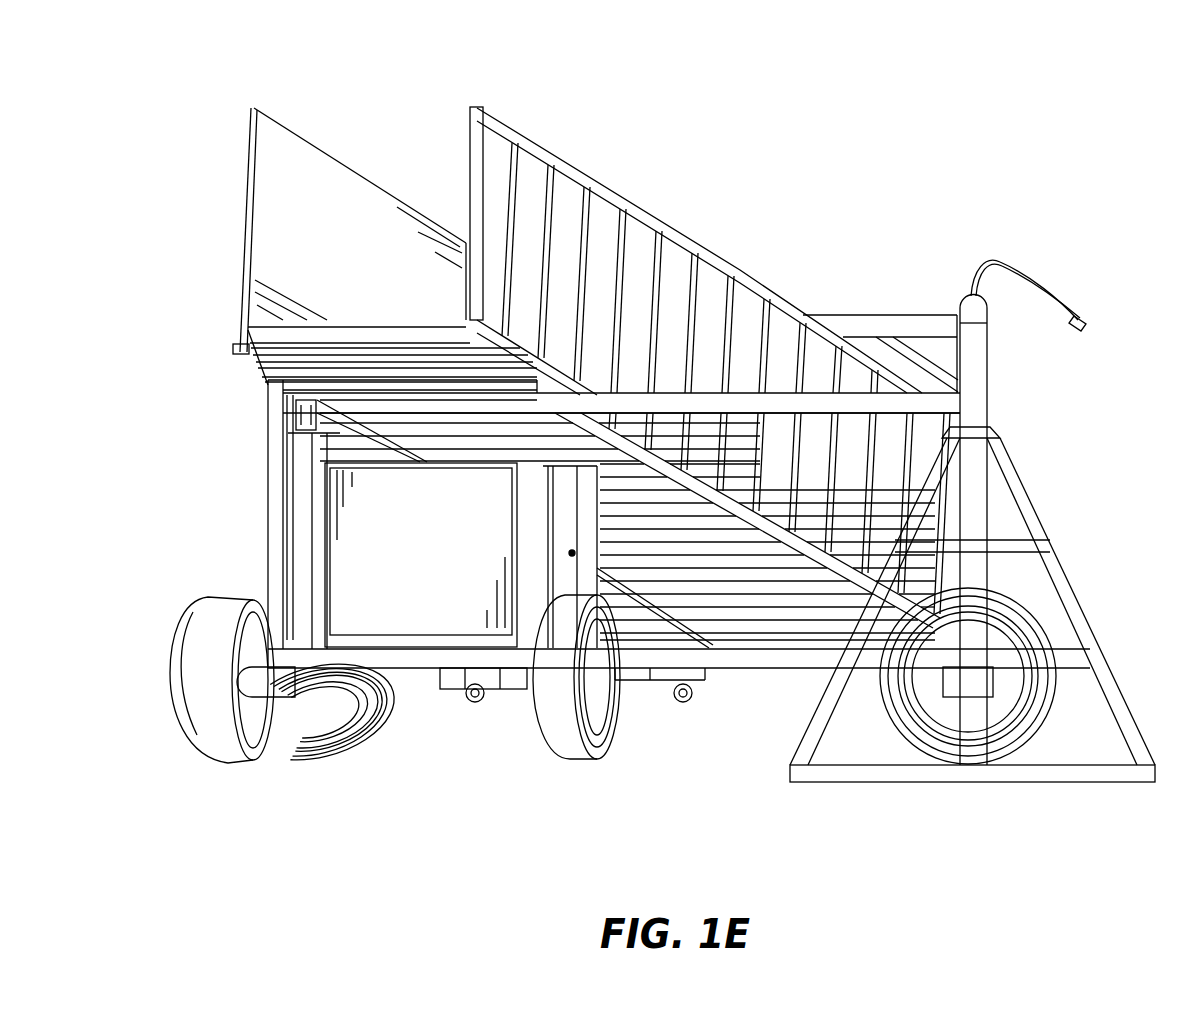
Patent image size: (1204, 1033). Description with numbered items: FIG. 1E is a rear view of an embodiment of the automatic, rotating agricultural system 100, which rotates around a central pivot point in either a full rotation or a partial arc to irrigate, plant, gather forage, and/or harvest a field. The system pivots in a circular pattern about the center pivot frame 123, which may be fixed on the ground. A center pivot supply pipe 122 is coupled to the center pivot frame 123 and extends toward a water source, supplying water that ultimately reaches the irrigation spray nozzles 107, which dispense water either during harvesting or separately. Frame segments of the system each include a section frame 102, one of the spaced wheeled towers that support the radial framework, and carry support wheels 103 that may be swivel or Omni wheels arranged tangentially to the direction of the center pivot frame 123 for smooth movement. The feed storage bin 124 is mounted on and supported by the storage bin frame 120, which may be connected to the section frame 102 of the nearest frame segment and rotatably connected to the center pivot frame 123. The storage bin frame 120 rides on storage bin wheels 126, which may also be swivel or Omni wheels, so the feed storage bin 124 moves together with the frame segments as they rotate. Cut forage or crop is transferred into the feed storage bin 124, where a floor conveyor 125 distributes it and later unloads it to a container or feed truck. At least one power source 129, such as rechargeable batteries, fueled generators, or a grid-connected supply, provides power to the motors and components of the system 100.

The automatic, rotating agricultural system 100 is at (666, 432).
The section frame 102 is at (880, 327).
The support wheel 103 is at (913, 730).
The irrigation spray nozzle 107 is at (1080, 321).
The storage bin frame 120 is at (273, 527).
The center pivot supply pipe 122 is at (977, 385).
The center pivot frame 123 is at (1043, 548).
The feed storage bin 124 is at (677, 260).
The floor conveyor 125 is at (297, 340).
The storage bin wheel 126 is at (222, 750).
The power source 129 is at (430, 607).